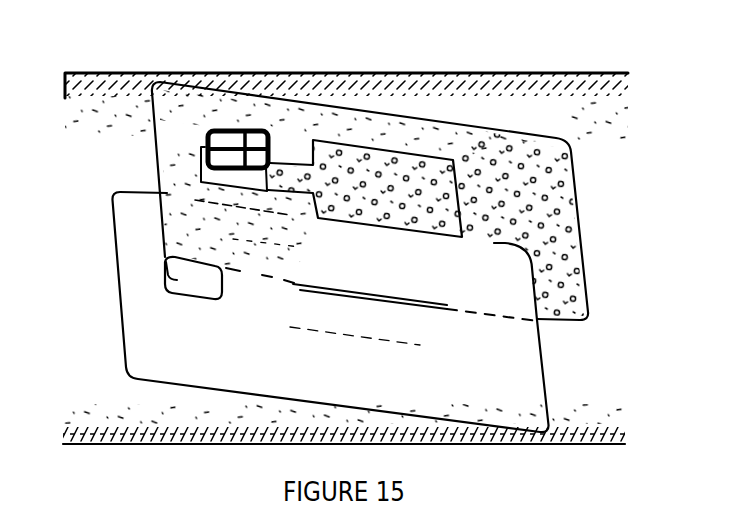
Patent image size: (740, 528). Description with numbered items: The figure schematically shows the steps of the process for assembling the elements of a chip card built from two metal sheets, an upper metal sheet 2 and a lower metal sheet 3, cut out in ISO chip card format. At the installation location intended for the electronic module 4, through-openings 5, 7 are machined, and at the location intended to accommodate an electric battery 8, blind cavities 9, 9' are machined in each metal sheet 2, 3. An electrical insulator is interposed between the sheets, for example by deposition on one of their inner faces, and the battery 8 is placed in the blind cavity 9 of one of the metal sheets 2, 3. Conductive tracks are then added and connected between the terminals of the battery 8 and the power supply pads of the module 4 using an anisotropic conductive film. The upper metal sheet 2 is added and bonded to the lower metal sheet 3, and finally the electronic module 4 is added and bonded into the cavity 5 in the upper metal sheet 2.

The upper metal sheet 2 is at (571, 180).
The lower metal sheet 3 is at (531, 362).
The electronic module 4 is at (205, 145).
The through-opening 5 is at (213, 173).
The through-opening 7 is at (164, 281).
The electric battery 8 is at (313, 293).
The blind cavity 9 is at (434, 390).
The blind cavity 9' is at (427, 128).